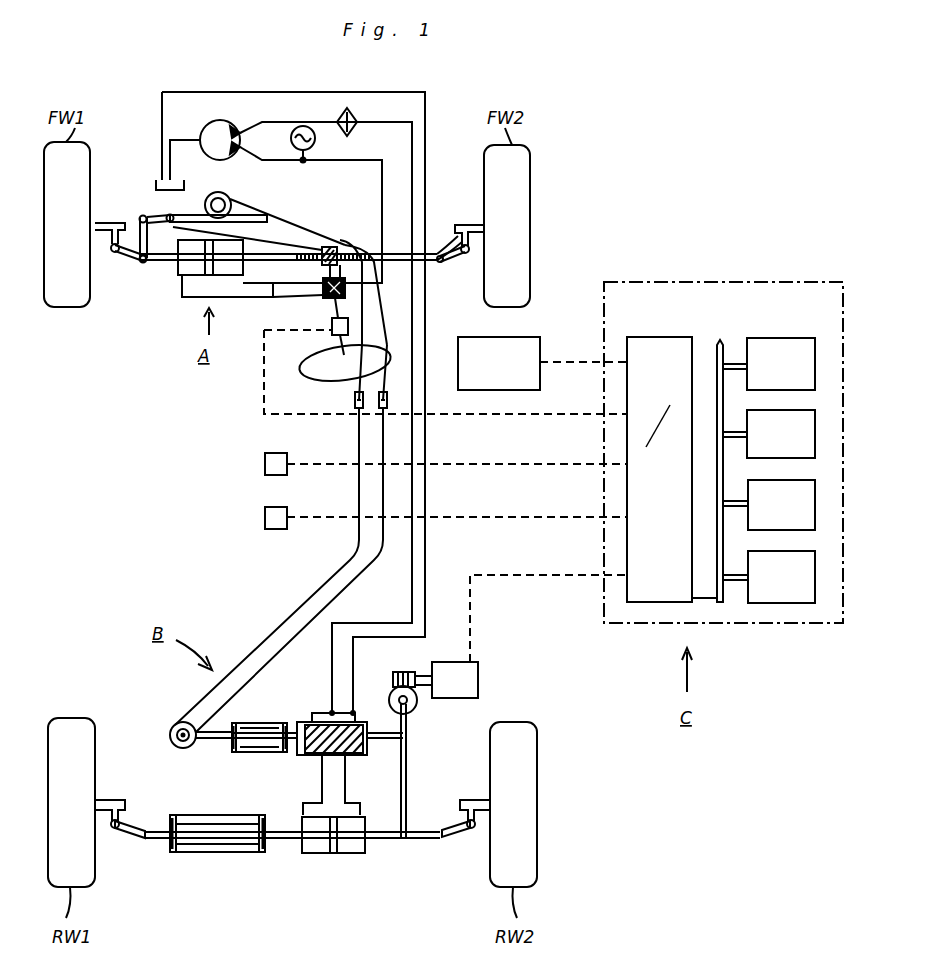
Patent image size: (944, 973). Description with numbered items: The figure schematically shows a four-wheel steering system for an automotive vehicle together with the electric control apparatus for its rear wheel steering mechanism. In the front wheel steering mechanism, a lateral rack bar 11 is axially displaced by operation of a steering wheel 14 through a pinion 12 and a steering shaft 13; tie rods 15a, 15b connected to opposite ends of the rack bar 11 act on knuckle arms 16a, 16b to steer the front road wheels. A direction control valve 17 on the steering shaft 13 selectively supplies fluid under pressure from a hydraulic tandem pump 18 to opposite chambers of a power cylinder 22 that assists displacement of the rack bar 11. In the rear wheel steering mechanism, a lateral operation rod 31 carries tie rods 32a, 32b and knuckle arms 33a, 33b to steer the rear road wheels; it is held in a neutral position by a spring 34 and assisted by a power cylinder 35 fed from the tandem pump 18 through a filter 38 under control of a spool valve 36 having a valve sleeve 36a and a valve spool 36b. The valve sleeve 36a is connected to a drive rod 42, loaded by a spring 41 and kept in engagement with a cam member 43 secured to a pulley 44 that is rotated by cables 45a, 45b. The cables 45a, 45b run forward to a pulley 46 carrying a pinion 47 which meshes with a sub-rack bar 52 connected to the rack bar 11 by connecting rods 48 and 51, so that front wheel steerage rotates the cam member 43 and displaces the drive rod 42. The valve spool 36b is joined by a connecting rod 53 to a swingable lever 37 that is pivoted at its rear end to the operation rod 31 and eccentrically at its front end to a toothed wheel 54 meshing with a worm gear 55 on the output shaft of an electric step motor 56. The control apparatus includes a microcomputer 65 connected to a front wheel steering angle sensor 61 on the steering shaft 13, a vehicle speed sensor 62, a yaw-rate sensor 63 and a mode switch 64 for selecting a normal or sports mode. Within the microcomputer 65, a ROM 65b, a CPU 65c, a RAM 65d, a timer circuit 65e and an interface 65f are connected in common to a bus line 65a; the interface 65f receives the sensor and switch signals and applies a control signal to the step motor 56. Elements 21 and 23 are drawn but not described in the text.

The lateral rack bar 11 is at (368, 254).
The pinion 12 is at (318, 248).
The steering shaft 13 is at (372, 304).
The steering wheel 14 is at (318, 382).
The tie rod 15a is at (130, 260).
The tie rod 15b is at (452, 262).
The knuckle arm 16a is at (110, 222).
The knuckle arm 16b is at (462, 222).
The direction control valve 17 is at (326, 300).
The hydraulic tandem pump 18 is at (210, 126).
The electric motor 21 is at (291, 138).
The power cylinder 22 is at (180, 272).
The reservoir 23 is at (160, 184).
The filter 38 is at (355, 128).
The pulley 46 is at (218, 198).
The pinion 47 is at (250, 208).
The connecting rod 48 is at (152, 220).
The connecting rod 51 is at (138, 240).
The sub-rack bar 52 is at (284, 230).
The front wheel steering angle sensor 61 is at (330, 334).
The vehicle speed sensor 62 is at (264, 465).
The yaw-rate sensor 63 is at (264, 518).
The mode switch 64 is at (528, 337).
The microcomputer 65 is at (744, 438).
The bus line 65a is at (718, 604).
The ROM 65b is at (815, 366).
The CPU 65c is at (815, 432).
The RAM 65d is at (815, 502).
The timer circuit 65e is at (815, 575).
The interface 65f is at (660, 602).
The lateral operation rod 31 is at (283, 840).
The tie rod 32a is at (130, 840).
The tie rod 32b is at (455, 840).
The knuckle arm 33a is at (110, 800).
The knuckle arm 33b is at (472, 800).
The spring 34 is at (183, 852).
The power cylinder 35 is at (318, 853).
The spool valve 36 is at (317, 748).
The valve sleeve 36a is at (312, 714).
The valve spool 36b is at (300, 752).
The swingable lever 37 is at (408, 782).
The spring 41 is at (240, 752).
The drive rod 42 is at (217, 740).
The cam member 43 is at (171, 740).
The pulley 44 is at (170, 726).
The cable 45a is at (256, 644).
The cable 45b is at (286, 620).
The connecting rod 53 is at (390, 742).
The toothed wheel 54 is at (416, 708).
The worm gear 55 is at (400, 672).
The electric step motor 56 is at (452, 662).